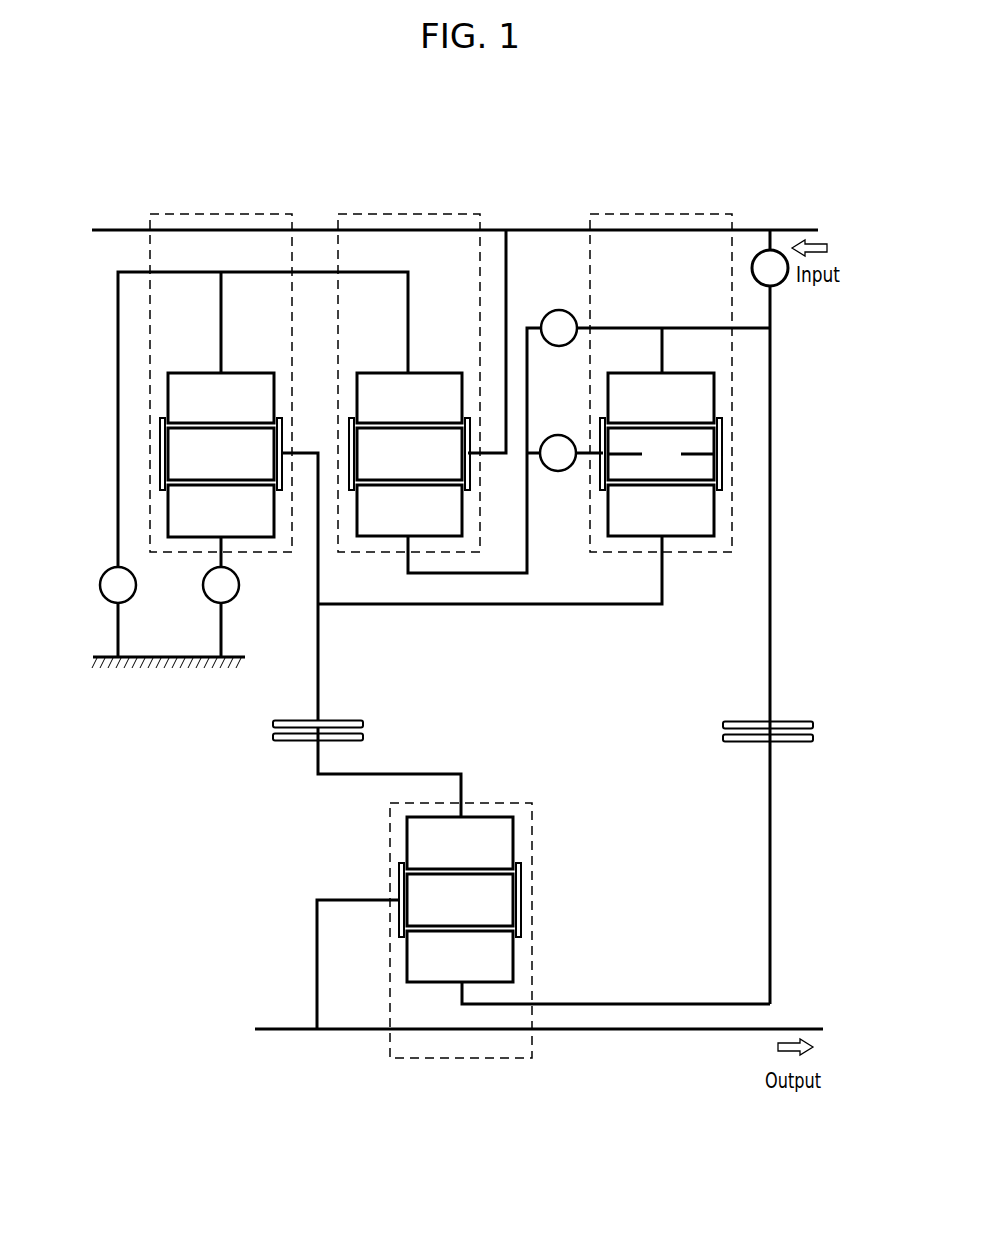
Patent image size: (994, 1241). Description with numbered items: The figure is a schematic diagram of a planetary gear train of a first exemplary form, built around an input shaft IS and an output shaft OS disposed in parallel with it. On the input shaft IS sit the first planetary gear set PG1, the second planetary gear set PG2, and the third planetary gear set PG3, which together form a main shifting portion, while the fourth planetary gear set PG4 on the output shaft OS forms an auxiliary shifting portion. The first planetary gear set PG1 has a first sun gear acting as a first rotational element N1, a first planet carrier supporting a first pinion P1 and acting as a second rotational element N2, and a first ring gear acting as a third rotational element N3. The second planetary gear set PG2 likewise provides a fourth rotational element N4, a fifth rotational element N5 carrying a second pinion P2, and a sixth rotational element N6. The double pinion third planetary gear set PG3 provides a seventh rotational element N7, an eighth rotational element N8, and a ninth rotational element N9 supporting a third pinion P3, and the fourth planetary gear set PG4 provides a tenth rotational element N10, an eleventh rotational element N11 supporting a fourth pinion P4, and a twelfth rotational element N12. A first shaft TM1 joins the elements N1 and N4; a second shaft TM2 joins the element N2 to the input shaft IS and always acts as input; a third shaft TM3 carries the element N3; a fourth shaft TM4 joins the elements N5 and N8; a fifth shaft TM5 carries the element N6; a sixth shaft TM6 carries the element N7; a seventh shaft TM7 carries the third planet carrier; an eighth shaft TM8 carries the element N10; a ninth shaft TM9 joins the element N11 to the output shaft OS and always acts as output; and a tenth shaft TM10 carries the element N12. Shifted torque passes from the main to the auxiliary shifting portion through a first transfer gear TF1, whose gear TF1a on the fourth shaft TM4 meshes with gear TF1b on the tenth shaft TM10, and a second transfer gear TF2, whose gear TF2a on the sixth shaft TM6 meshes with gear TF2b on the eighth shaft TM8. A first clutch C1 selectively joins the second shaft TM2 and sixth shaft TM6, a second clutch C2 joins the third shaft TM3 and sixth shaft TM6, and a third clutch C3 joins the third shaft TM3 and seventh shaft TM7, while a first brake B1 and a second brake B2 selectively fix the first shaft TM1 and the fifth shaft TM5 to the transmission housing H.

The first planetary gear set PG1 is at (414, 210).
The second planetary gear set PG2 is at (228, 210).
The third planetary gear set PG3 is at (667, 210).
The fourth planetary gear set PG4 is at (458, 1060).
The first rotational element N1 is at (409, 398).
The second rotational element N2 is at (470, 468).
The third rotational element N3 is at (409, 510).
The fourth rotational element N4 is at (221, 398).
The fifth rotational element N5 is at (282, 440).
The sixth rotational element N6 is at (221, 511).
The seventh rotational element N7 is at (661, 398).
The eighth rotational element N8 is at (661, 510).
The ninth rotational element N9 is at (602, 470).
The tenth rotational element N10 is at (460, 956).
The eleventh rotational element N11 is at (521, 912).
The twelfth rotational element N12 is at (460, 843).
The first pinion P1 is at (409, 454).
The second pinion P2 is at (221, 454).
The third pinion P3 is at (661, 454).
The fourth pinion P4 is at (460, 900).
The first shaft TM1 is at (320, 270).
The second shaft TM2 is at (508, 265).
The third shaft TM3 is at (448, 575).
The fourth shaft TM4 is at (505, 606).
The fifth shaft TM5 is at (228, 540).
The sixth shaft TM6 is at (772, 398).
The seventh shaft TM7 is at (603, 440).
The eighth shaft TM8 is at (657, 1003).
The ninth shaft TM9 is at (340, 899).
The tenth shaft TM10 is at (440, 774).
The input shaft IS is at (790, 228).
The output shaft OS is at (688, 1032).
The first clutch C1 is at (770, 268).
The second clutch C2 is at (559, 328).
The third clutch C3 is at (565, 453).
The first brake B1 is at (118, 612).
The second brake B2 is at (221, 612).
The transmission housing H is at (165, 668).
The first transfer gear TF1 is at (379, 726).
The first transfer gear TF1a is at (363, 724).
The first transfer gear TF1b is at (363, 737).
The second transfer gear TF2 is at (697, 726).
The second transfer gear TF2a is at (723, 725).
The second transfer gear TF2b is at (723, 738).